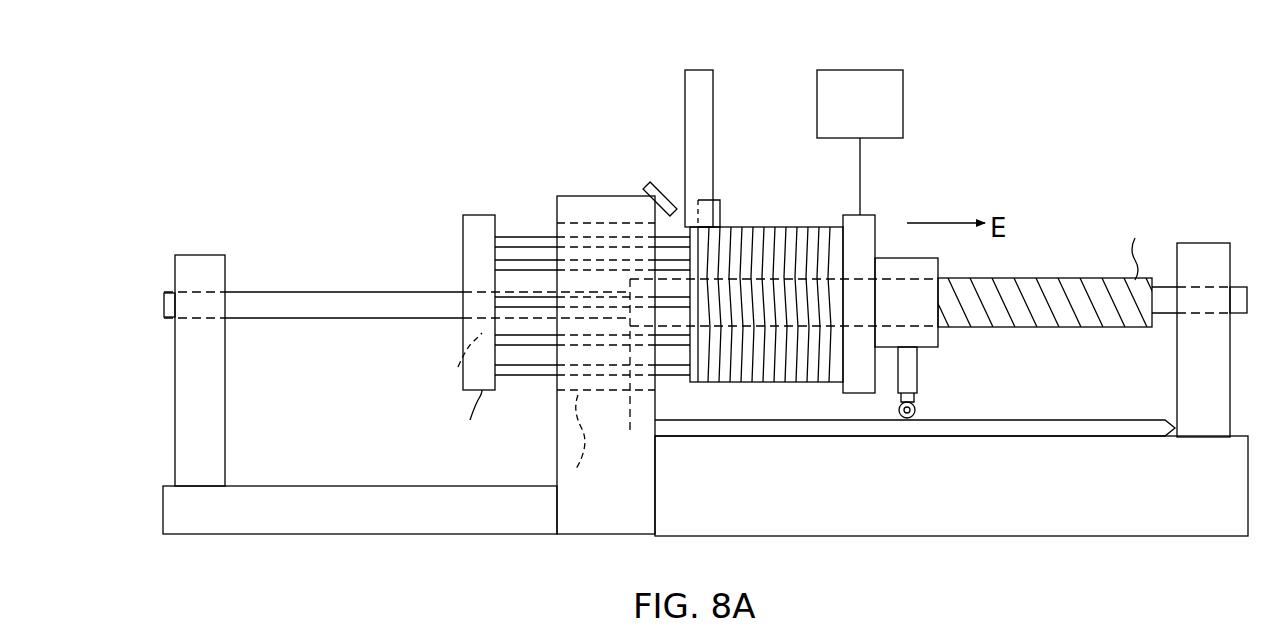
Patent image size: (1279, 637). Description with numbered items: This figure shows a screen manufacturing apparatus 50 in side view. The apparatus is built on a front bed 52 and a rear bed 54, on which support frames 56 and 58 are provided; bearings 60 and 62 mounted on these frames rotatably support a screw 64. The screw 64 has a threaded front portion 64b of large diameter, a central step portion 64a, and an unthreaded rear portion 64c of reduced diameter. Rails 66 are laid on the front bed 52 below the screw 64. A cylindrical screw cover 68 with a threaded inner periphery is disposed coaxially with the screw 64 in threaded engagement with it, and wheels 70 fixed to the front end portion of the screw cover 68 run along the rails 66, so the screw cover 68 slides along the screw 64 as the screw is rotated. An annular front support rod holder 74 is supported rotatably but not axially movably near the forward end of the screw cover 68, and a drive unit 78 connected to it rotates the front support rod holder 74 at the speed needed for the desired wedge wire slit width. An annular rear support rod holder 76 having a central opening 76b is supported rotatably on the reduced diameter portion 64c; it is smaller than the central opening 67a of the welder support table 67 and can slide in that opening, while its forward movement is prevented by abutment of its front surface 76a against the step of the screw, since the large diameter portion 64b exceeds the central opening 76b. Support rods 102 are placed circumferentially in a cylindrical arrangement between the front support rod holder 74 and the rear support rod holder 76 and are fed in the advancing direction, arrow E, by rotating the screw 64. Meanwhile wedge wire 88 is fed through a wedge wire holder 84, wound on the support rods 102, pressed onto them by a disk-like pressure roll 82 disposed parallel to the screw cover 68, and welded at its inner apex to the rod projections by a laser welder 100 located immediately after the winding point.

The screen manufacturing apparatus 50 is at (1031, 160).
The front bed 52 is at (947, 518).
The rear bed 54 is at (339, 520).
The support frame 56 is at (1176, 376).
The support frame 58 is at (213, 402).
The bearing 60 is at (1205, 279).
The bearing 62 is at (213, 277).
The screw 64 is at (1052, 299).
The central step portion 64a is at (774, 370).
The threaded front portion 64b is at (1140, 245).
The unthreaded rear portion 64c is at (360, 302).
The rails 66 is at (1026, 426).
The welder support table 67 is at (601, 199).
The central opening 67a is at (587, 449).
The screw cover 68 is at (890, 255).
The wheels 70 is at (918, 408).
The front support rod holder 74 is at (856, 229).
The rear support rod holder 76 is at (482, 234).
The front surface 76a is at (469, 418).
The central opening 76b is at (450, 362).
The drive unit 78 is at (903, 107).
The pressure roll 82 is at (690, 80).
The wedge wire holder 84 is at (722, 212).
The wedge wire 88 is at (765, 386).
The laser welder 100 is at (654, 183).
The support rods 102 is at (526, 234).